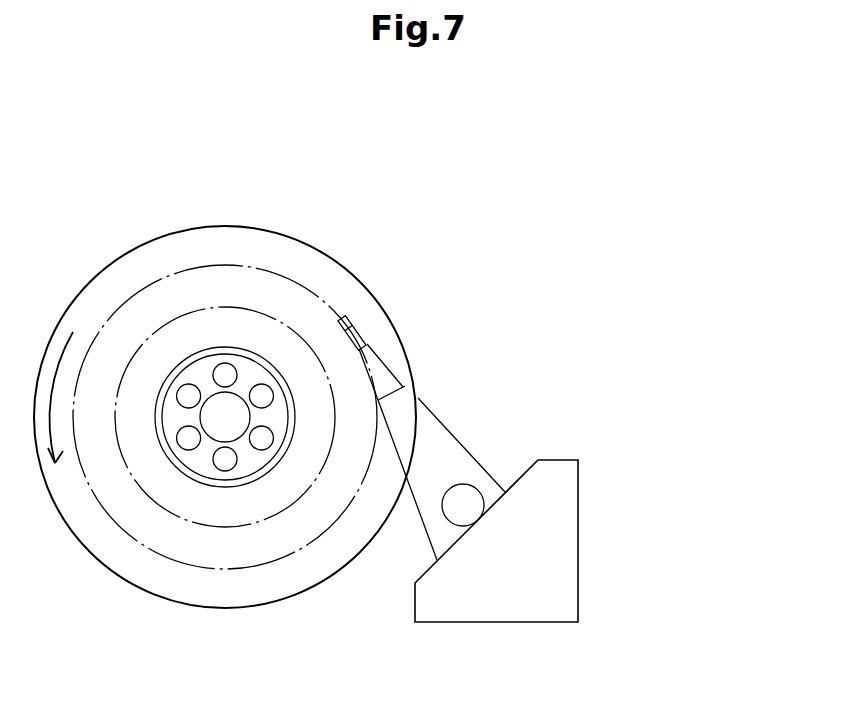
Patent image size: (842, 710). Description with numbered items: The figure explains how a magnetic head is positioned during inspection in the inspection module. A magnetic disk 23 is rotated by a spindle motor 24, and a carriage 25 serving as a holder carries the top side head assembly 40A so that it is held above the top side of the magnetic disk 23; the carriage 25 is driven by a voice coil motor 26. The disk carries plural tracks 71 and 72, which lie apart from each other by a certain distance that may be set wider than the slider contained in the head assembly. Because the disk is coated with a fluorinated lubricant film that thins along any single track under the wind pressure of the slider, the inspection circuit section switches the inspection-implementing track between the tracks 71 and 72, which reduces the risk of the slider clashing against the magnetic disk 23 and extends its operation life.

The magnetic disk 23 is at (118, 272).
The spindle motor 24 is at (192, 490).
The carriage 25 is at (425, 523).
The voice coil motor 26 is at (607, 570).
The top side head assembly 40A is at (373, 362).
The track 71 is at (263, 268).
The track 72 is at (213, 305).